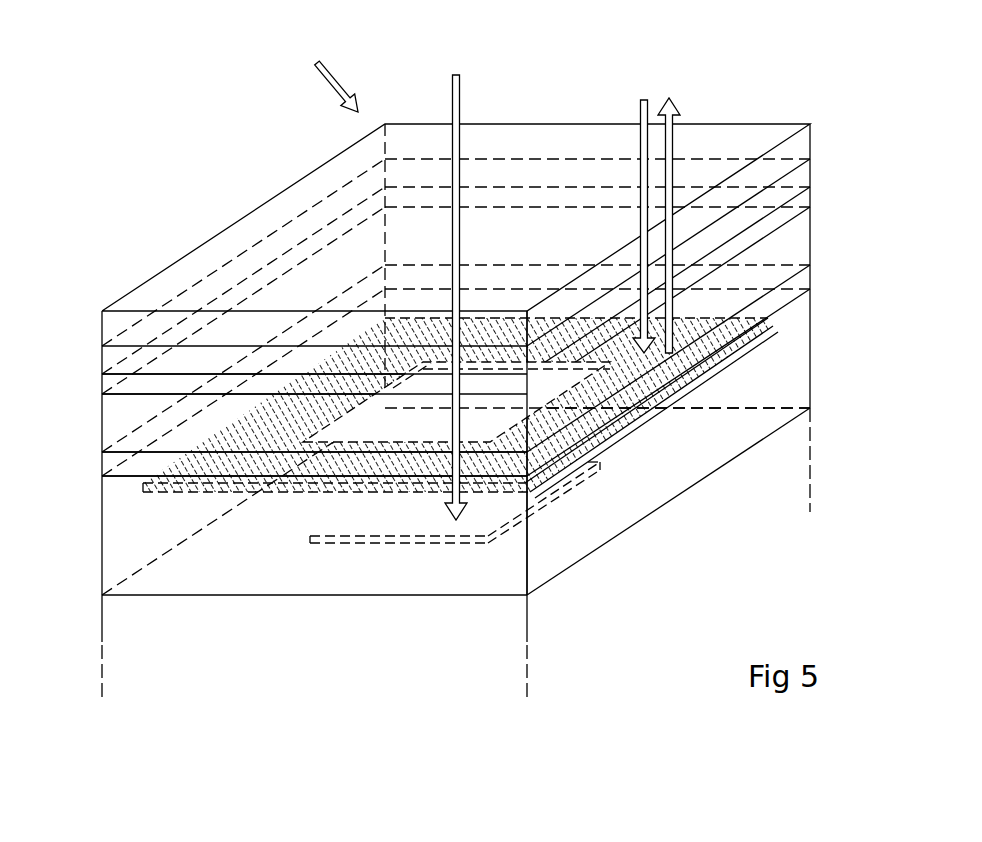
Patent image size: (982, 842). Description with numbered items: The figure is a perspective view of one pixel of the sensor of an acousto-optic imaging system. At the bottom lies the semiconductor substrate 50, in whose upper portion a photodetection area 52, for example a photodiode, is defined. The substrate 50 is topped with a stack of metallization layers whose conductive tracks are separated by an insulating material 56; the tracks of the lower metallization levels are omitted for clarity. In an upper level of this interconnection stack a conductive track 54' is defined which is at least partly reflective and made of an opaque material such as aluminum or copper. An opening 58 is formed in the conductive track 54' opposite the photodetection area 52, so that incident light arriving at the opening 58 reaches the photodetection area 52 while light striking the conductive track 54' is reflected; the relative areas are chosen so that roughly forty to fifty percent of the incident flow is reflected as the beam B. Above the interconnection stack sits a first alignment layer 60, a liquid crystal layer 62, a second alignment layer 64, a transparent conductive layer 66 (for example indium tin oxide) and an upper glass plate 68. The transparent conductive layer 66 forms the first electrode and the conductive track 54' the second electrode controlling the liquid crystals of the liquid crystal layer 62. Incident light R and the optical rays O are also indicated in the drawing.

The semiconductor substrate 50 is at (798, 463).
The photodetection area 52 is at (350, 527).
The conductive track 54' is at (506, 396).
The insulating material 56 is at (778, 362).
The opening 58 is at (388, 426).
The first alignment layer 60 is at (800, 280).
The liquid crystal layer 62 is at (802, 237).
The second alignment layer 64 is at (800, 197).
The transparent conductive layer 66 is at (800, 176).
The upper glass plate 68 is at (800, 138).
The incident radiation R is at (336, 75).
The optical ray O is at (461, 94).
The reflected beam B is at (674, 113).